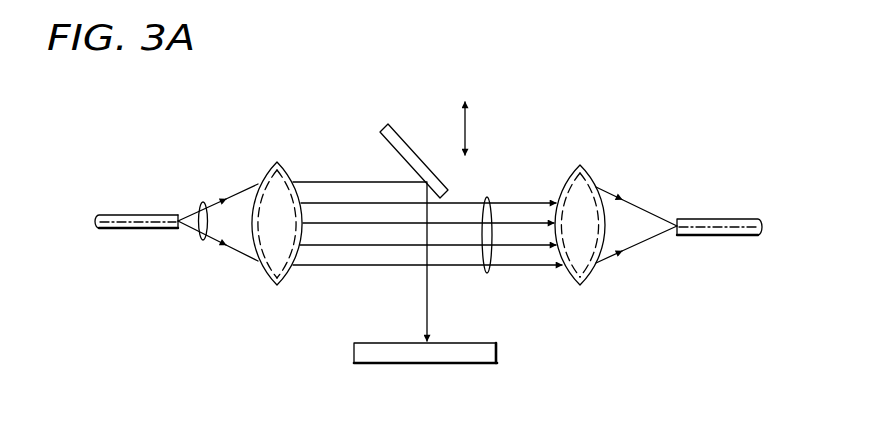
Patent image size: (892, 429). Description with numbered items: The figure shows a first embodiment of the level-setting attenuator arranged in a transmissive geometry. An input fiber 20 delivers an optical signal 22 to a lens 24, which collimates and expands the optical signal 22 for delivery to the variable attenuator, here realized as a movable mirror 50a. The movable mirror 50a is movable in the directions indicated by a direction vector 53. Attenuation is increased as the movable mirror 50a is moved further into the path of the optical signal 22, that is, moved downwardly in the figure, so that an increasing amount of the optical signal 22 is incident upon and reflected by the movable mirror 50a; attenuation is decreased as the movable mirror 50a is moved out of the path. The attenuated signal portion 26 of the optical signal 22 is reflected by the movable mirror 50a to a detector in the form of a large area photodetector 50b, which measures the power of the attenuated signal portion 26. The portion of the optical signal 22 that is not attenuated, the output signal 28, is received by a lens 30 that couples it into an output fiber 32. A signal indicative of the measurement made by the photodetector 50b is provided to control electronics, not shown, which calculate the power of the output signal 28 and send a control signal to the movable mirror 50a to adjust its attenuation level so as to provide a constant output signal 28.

The input fiber 20 is at (130, 215).
The optical signal 22 is at (202, 243).
The lens 24 is at (277, 162).
The attenuated signal portion 26 is at (425, 296).
The output signal 28 is at (489, 273).
The lens 30 is at (580, 165).
The output fiber 32 is at (722, 219).
The movable mirror 50a is at (401, 136).
The large area photodetector 50b is at (498, 356).
The direction vector 53 is at (467, 128).